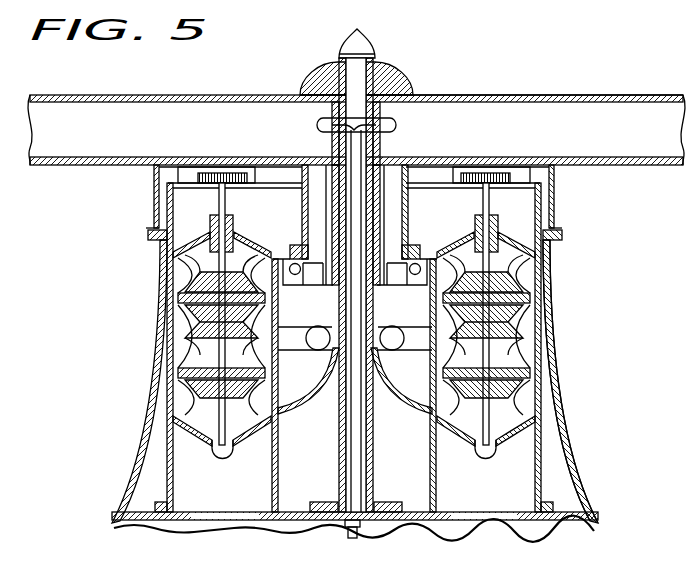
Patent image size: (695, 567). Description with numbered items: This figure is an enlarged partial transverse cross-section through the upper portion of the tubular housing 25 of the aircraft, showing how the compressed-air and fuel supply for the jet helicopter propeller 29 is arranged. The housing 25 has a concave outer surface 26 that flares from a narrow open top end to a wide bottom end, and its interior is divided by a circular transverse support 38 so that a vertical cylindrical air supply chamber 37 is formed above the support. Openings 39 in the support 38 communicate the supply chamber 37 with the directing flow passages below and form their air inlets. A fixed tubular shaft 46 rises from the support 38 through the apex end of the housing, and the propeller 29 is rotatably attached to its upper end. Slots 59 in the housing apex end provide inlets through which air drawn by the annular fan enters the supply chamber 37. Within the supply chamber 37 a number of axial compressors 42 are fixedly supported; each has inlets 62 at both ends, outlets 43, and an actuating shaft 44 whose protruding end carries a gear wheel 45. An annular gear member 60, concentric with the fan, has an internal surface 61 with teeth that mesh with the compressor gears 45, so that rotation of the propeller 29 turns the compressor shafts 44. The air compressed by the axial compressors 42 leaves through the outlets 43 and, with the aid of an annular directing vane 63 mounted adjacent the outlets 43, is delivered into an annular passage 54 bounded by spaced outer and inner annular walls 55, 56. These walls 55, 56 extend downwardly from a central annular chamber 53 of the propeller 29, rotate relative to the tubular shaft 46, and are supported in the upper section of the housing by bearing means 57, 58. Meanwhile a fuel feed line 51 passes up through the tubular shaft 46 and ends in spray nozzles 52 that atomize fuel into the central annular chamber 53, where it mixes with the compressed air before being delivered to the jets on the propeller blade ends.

The tubular housing 25 is at (572, 399).
The concave outer surface 26 is at (553, 365).
The jet helicopter propeller 29 is at (482, 88).
The air supply chamber 37 is at (553, 456).
The circular transverse support 38 is at (568, 512).
The openings 39 is at (218, 518).
The axial compressors 42 is at (546, 305).
The compressor outlets 43 is at (320, 327).
The actuating shafts 44 is at (233, 209).
The gear wheels 45 is at (222, 178).
The fixed tubular shaft 46 is at (372, 492).
The fuel feed line 51 is at (353, 441).
The spray nozzles 52 is at (322, 127).
The central annular chamber 53 is at (507, 111).
The annular passage 54 is at (394, 221).
The outer annular wall 55 is at (407, 212).
The inner annular wall 56 is at (381, 232).
The bearing means 57 is at (414, 276).
The bearing means 58 is at (355, 186).
The slots 59 is at (540, 208).
The annular gear member 60 is at (553, 182).
The internal surface 61 is at (511, 167).
The inlets 62 is at (548, 234).
The annular directing vane 63 is at (318, 393).